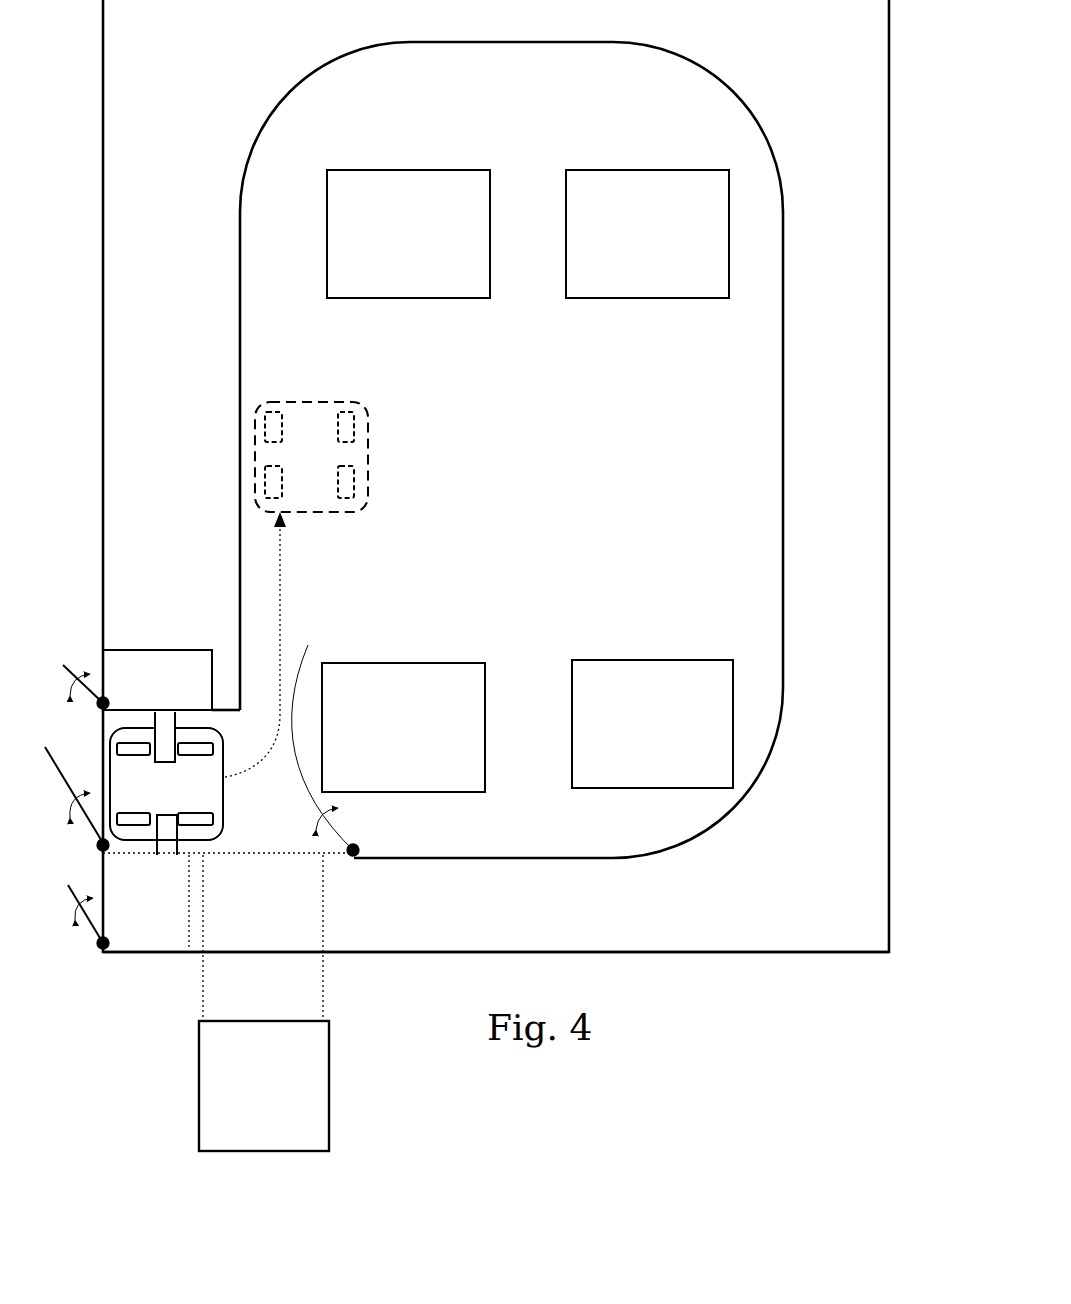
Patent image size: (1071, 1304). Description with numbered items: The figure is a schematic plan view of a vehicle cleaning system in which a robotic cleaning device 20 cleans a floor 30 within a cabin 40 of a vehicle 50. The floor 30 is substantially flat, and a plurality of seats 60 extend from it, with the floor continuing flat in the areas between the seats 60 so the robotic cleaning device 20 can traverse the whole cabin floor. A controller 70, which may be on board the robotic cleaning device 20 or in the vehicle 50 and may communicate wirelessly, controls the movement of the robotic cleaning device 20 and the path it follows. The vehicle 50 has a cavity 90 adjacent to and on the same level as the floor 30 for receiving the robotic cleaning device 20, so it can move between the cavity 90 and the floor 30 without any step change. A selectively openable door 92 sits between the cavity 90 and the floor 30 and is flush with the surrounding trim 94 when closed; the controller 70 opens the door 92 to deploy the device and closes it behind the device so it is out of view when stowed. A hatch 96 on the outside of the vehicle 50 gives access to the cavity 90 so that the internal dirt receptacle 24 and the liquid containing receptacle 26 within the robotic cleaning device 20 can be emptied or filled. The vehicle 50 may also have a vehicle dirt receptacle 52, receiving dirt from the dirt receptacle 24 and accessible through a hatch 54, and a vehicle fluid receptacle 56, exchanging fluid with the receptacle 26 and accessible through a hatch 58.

The robotic cleaning device 20 is at (120, 762).
The dirt receptacle 24 is at (180, 813).
The liquid containing receptacle 26 is at (160, 762).
The floor 30 is at (770, 530).
The cabin 40 is at (784, 267).
The vehicle 50 is at (889, 388).
The vehicle dirt receptacle 52 is at (165, 940).
The hatch 54 is at (96, 945).
The vehicle fluid receptacle 56 is at (155, 652).
The hatch 58 is at (78, 682).
The seats 60 is at (415, 280).
The controller 70 is at (320, 1072).
The cavity 90 is at (100, 849).
The door 92 is at (322, 830).
The trim 94 is at (397, 858).
The hatch 96 is at (76, 797).